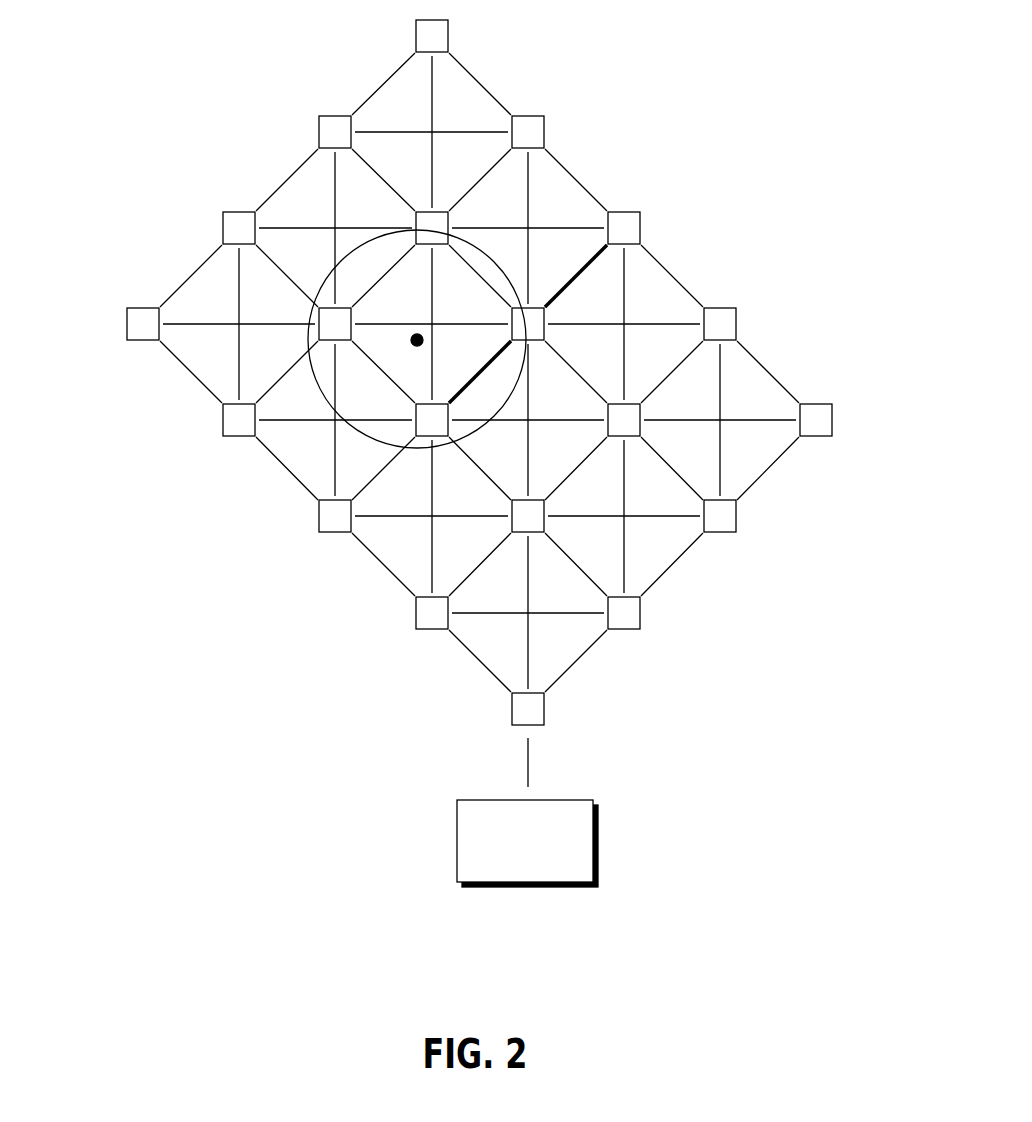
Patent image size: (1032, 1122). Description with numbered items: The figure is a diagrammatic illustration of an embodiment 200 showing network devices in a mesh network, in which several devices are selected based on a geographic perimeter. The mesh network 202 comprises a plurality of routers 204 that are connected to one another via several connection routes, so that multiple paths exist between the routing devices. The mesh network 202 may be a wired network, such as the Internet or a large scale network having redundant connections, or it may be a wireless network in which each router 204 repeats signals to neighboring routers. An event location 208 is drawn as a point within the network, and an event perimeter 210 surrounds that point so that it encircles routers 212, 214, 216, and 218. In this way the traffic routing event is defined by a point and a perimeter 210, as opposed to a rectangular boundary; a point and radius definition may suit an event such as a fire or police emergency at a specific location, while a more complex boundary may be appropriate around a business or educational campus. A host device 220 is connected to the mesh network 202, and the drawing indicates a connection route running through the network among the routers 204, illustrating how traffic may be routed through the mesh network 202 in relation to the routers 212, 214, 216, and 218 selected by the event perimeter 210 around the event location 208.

The embodiment showing a mesh network 200 is at (322, 822).
The mesh network 202 is at (690, 287).
The router 204 is at (737, 520).
The event location 208 is at (414, 344).
The event perimeter 210 is at (322, 393).
The router 212 is at (318, 324).
The router 214 is at (417, 438).
The router 216 is at (424, 212).
The router 218 is at (537, 310).
The host device 220 is at (552, 887).